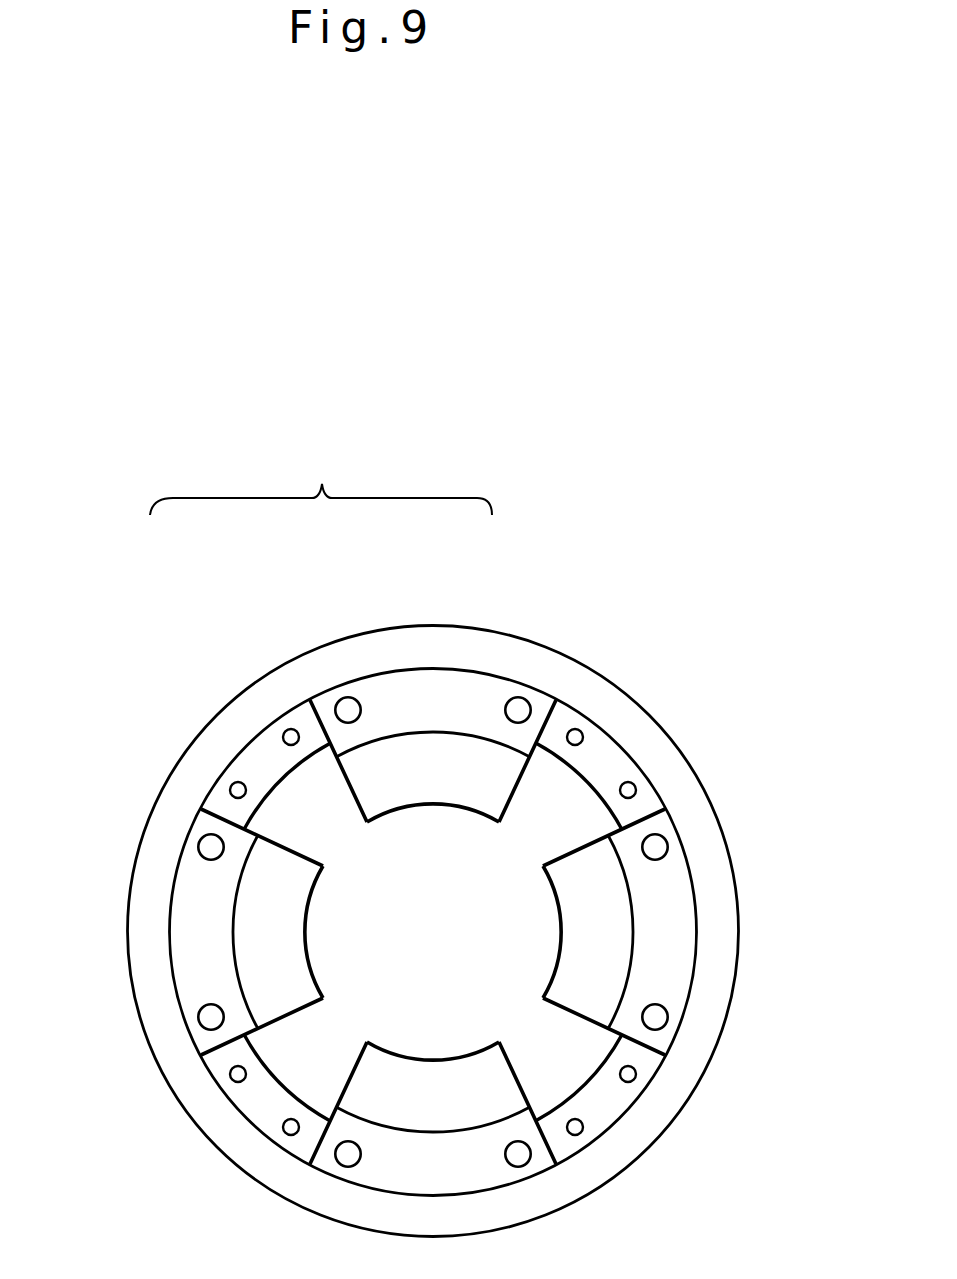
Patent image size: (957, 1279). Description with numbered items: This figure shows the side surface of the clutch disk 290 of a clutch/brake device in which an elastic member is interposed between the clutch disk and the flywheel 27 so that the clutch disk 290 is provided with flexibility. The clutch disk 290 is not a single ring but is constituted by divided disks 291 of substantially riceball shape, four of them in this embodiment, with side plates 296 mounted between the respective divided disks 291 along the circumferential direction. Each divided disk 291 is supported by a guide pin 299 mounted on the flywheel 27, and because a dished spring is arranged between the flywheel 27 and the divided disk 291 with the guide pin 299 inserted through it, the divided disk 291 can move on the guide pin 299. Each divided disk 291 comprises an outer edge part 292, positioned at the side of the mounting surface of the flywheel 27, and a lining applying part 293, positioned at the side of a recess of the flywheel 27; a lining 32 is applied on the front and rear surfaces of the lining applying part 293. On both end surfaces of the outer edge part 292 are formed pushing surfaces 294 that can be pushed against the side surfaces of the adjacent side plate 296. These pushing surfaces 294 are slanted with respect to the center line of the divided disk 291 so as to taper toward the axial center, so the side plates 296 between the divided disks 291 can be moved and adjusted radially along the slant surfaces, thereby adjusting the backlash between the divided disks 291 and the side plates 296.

The flywheel 27 is at (667, 762).
The clutch disk 290 is at (502, 667).
The divided disk 291 is at (321, 480).
The outer edge part 292 is at (445, 703).
The lining applying part 293 is at (393, 733).
The pushing surface 294 is at (260, 763).
The side plate 296 is at (312, 715).
The guide pin 299 is at (520, 712).
The lining 32 is at (426, 770).